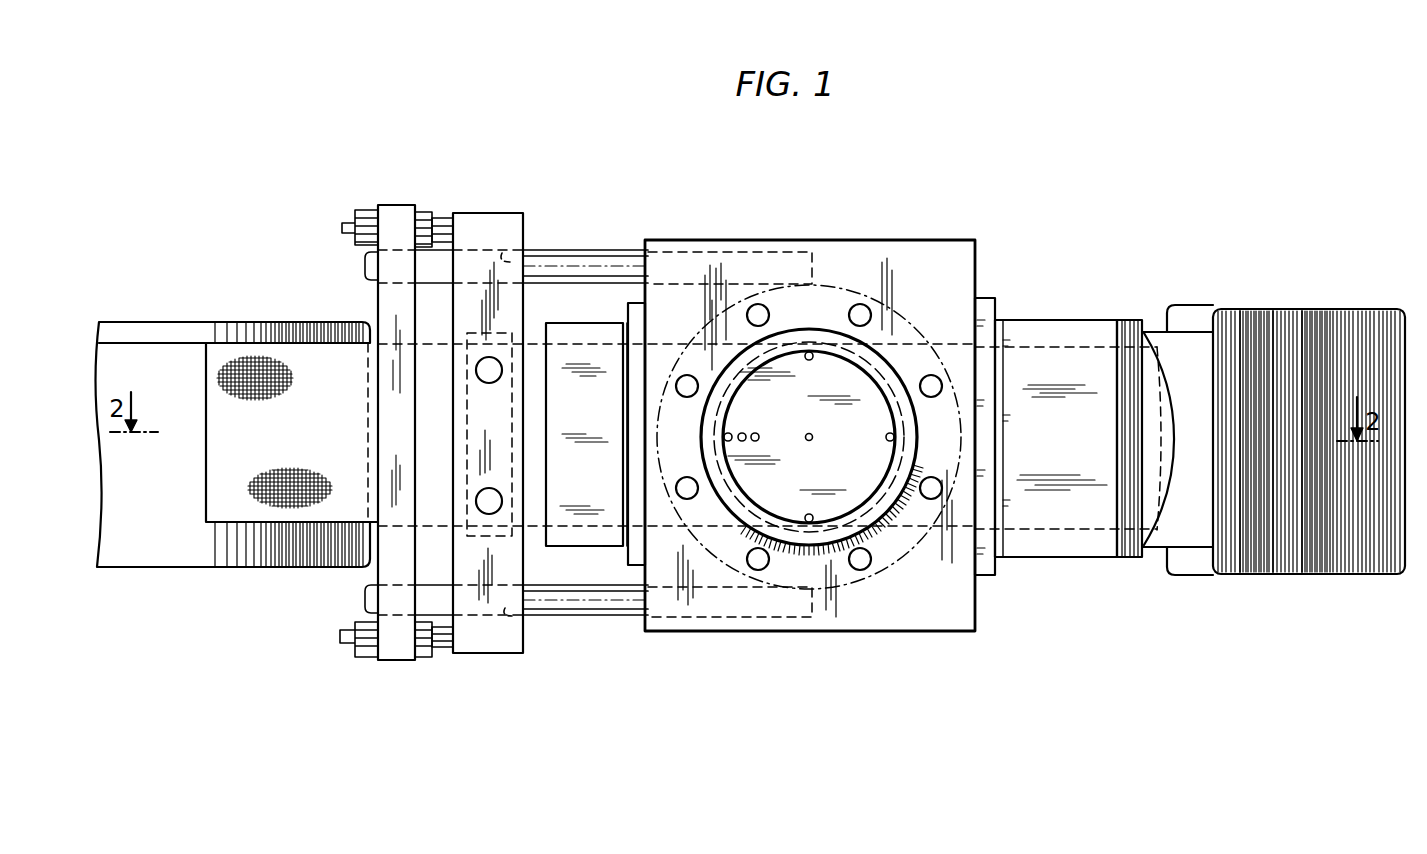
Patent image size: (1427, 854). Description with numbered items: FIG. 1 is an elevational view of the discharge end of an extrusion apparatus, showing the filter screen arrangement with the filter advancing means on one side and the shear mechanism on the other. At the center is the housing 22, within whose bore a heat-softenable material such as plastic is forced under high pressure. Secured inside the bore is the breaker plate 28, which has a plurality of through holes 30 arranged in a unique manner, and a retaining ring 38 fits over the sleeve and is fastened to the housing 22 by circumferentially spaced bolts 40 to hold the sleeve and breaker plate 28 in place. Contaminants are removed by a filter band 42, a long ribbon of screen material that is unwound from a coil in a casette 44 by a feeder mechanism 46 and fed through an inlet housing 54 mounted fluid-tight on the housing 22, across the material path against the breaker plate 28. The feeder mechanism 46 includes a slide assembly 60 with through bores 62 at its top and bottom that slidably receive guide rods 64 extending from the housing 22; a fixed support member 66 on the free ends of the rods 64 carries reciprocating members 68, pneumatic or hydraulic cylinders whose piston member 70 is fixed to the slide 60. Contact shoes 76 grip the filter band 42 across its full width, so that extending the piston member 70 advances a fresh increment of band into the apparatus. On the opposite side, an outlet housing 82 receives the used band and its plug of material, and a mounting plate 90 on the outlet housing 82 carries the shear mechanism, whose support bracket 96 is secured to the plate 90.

The housing 22 is at (932, 240).
The breaker plate 28 is at (821, 476).
The through holes 30 is at (806, 435).
The retaining ring 38 is at (907, 322).
The bolts 40 is at (852, 316).
The filter band 42 is at (212, 472).
The casette 44 is at (152, 322).
The feeder mechanism 46 is at (576, 246).
The inlet housing 54 is at (607, 545).
The slide assembly 60 is at (493, 213).
The through bores 62 is at (522, 254).
The guide rods 64 is at (581, 284).
The fixed support member 66 is at (395, 205).
The reciprocating members 68 is at (427, 212).
The piston member 70 is at (445, 218).
The filter band contact shoes 76 is at (466, 407).
The outlet housing 82 is at (1057, 320).
The mounting plate 90 is at (1130, 320).
The support bracket 96 is at (1348, 307).